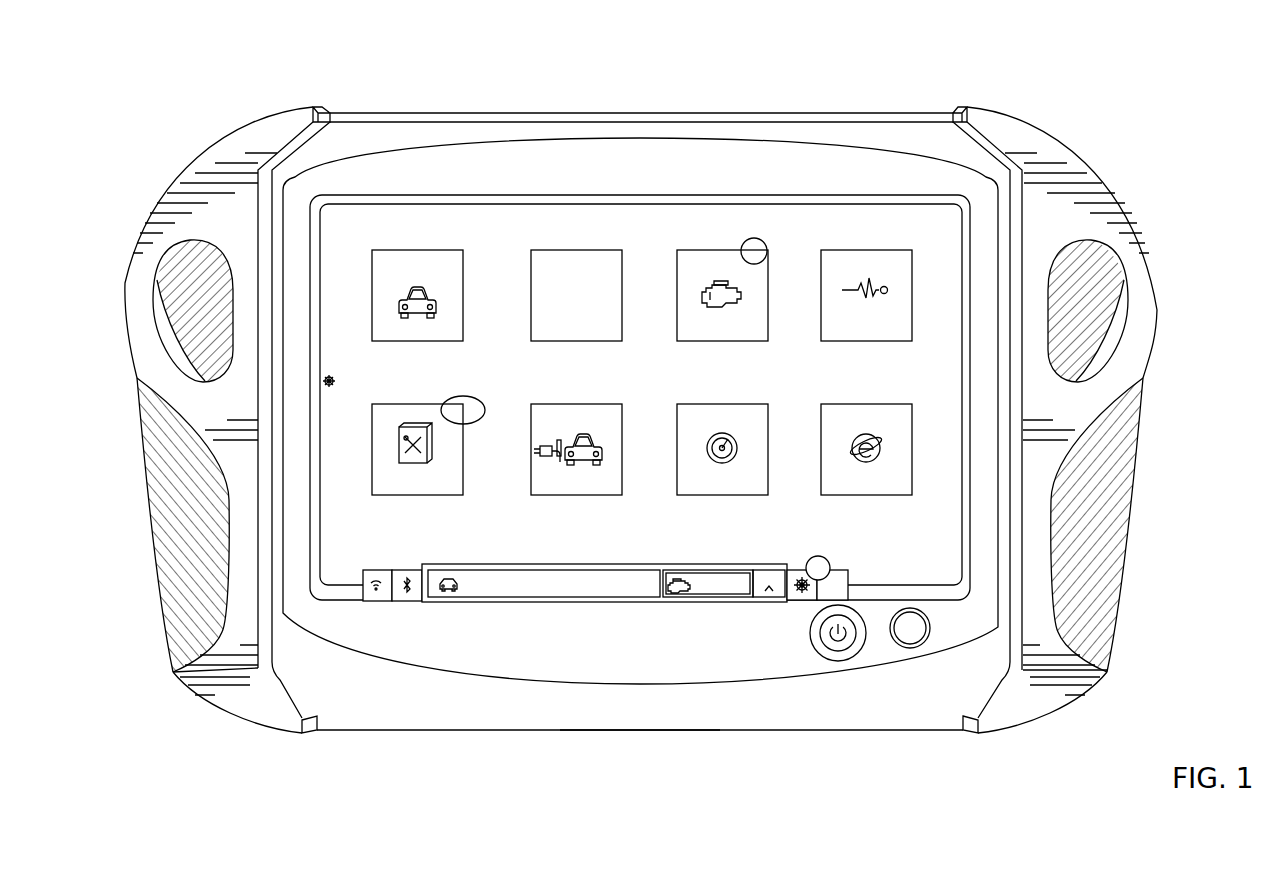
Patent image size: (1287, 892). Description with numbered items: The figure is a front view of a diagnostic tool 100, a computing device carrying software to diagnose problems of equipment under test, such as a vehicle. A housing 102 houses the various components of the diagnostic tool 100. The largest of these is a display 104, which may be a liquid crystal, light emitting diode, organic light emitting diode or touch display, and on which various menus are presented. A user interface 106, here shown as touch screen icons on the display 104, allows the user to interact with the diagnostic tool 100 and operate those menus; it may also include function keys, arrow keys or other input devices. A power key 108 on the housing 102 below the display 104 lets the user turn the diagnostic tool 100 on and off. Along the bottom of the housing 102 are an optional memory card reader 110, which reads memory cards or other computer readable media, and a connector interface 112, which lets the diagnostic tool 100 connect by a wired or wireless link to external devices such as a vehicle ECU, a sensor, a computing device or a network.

The diagnostic tool 100 is at (1246, 91).
The housing 102 is at (578, 113).
The display 104 is at (893, 235).
The user interface 106 is at (417, 250).
The power key 108 is at (845, 643).
The memory card reader 110 is at (377, 732).
The connector interface 112 is at (637, 733).